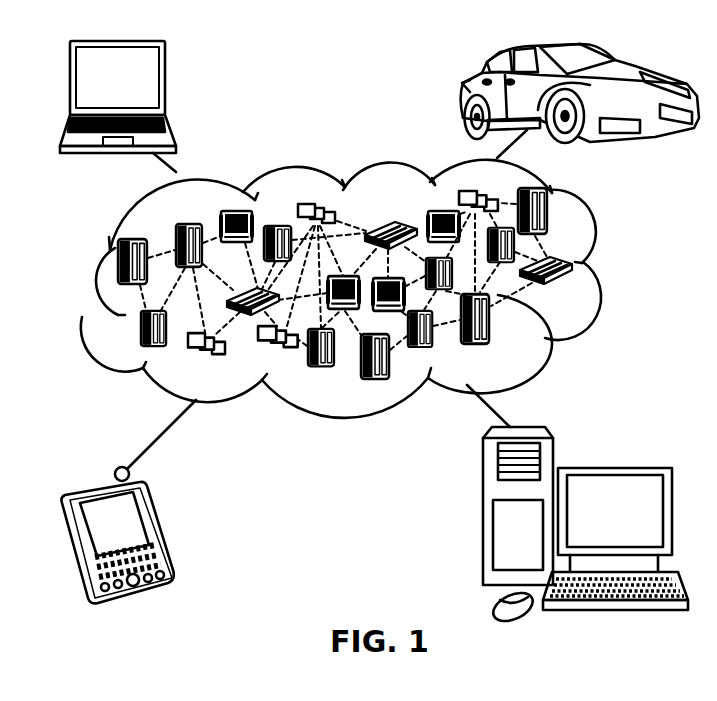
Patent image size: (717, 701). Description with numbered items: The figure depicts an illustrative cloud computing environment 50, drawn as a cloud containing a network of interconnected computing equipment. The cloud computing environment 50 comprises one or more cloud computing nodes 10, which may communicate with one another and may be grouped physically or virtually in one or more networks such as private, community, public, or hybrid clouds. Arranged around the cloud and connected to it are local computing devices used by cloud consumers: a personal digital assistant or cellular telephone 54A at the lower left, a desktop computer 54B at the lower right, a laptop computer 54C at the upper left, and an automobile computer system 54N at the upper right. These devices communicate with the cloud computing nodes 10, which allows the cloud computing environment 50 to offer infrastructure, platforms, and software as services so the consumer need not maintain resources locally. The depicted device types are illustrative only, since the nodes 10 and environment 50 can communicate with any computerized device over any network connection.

The cloud computing nodes 10 is at (572, 289).
The cloud computing environment 50 is at (613, 272).
The personal digital assistant (PDA) or cellular telephone 54A is at (162, 531).
The desktop computer 54B is at (618, 468).
The laptop computer 54C is at (166, 82).
The automobile computer system 54N is at (462, 93).